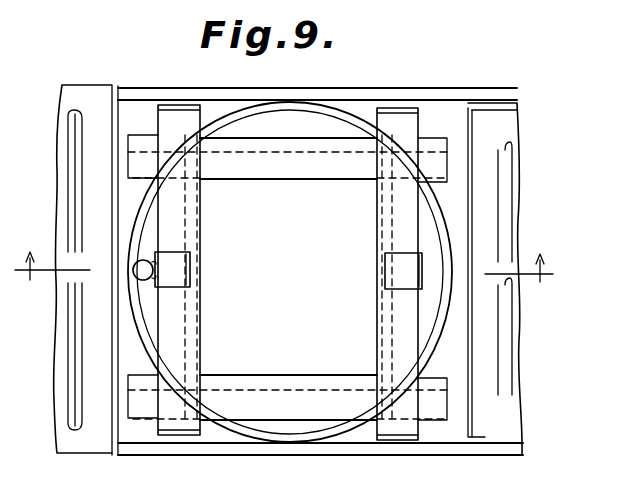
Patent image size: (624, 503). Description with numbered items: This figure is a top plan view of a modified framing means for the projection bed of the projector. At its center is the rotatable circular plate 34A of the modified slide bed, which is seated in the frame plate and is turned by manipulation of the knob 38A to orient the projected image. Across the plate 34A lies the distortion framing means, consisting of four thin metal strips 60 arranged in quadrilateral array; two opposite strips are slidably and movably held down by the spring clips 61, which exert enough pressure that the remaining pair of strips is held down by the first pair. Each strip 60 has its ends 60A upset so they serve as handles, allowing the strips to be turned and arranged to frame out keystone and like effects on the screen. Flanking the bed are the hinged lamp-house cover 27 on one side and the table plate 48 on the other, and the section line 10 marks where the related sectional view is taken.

The section line 10 is at (281, 282).
The hinged lamp-house cover 27 is at (85, 445).
The circular plate 34A is at (143, 237).
The knob 38A is at (143, 280).
The table plate 48 is at (510, 418).
The thin metal strips 60 is at (333, 168).
The upset ends 60A is at (167, 105).
The spring clips 61 is at (180, 265).